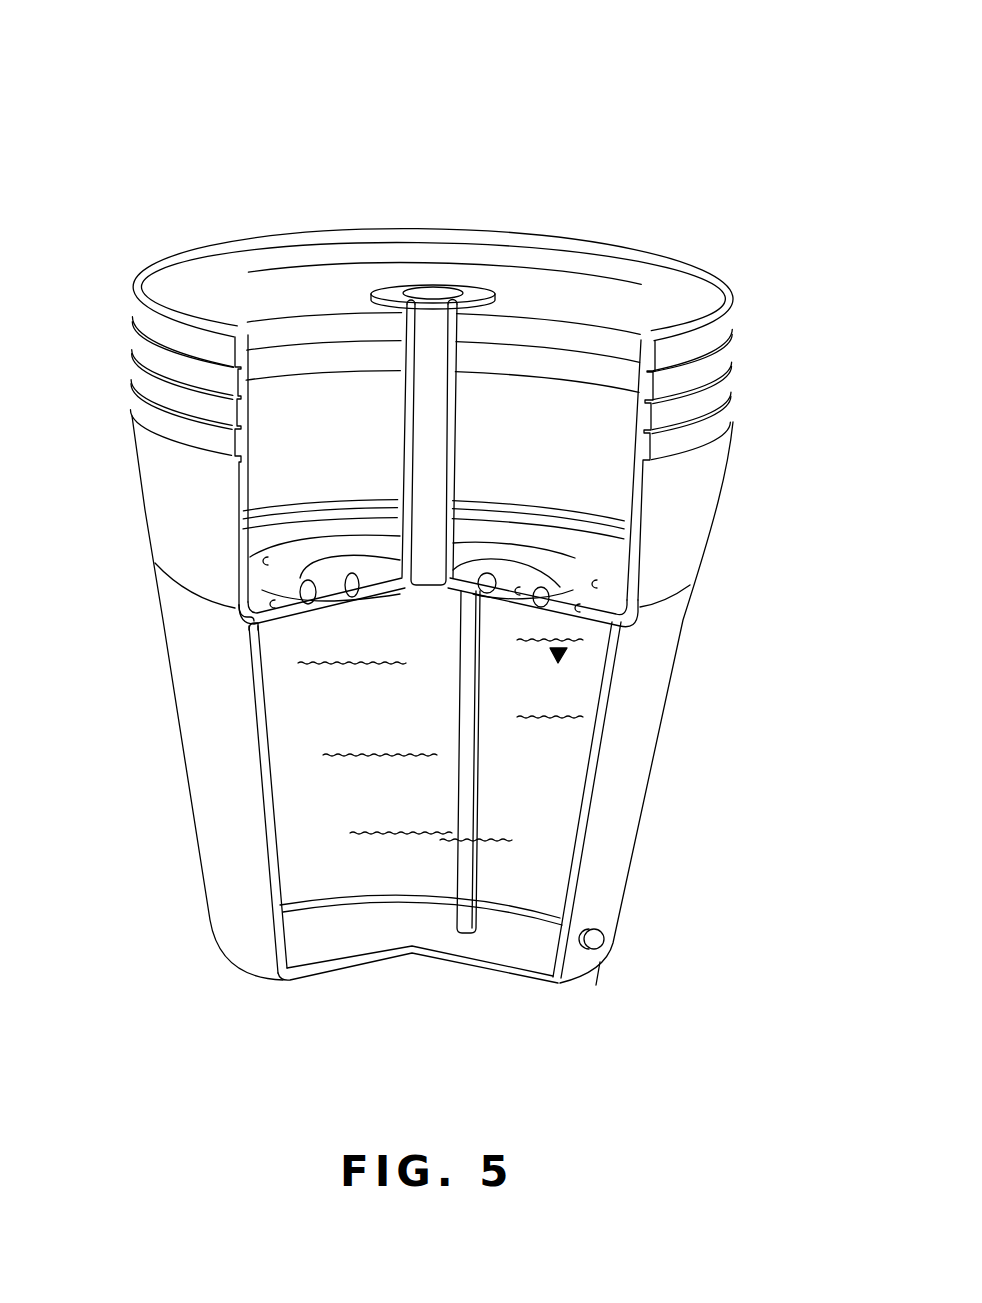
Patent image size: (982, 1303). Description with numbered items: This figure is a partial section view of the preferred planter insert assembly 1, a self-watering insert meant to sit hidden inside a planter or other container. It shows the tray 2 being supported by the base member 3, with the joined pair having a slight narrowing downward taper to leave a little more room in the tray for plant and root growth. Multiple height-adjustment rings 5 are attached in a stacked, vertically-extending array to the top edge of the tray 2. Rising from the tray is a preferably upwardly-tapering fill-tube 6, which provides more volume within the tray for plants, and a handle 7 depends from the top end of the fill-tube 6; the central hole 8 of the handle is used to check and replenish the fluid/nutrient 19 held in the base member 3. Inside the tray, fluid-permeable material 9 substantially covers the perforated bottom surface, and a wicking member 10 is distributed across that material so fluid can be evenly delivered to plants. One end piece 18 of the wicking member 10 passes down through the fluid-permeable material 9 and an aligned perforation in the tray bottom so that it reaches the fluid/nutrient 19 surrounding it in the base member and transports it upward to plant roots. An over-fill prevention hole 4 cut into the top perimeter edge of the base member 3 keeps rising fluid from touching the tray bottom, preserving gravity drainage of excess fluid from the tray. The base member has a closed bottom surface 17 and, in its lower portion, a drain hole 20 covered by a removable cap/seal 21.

The planter insert assembly 1 is at (240, 110).
The tray 2 is at (177, 528).
The base member 3 is at (215, 787).
The over-fill prevention hole 4 is at (237, 618).
The height-adjustment ring 5 is at (708, 430).
The fill-tube 6 is at (453, 405).
The handle 7 is at (478, 298).
The central hole 8 is at (433, 312).
The fluid-permeable material 9 is at (593, 599).
The wicking member 10 is at (587, 562).
The closed bottom surface 17 is at (303, 938).
The end piece 18 is at (468, 758).
The fluid/nutrient 19 is at (567, 652).
The drain hole 20 is at (590, 965).
The cap/seal 21 is at (598, 939).